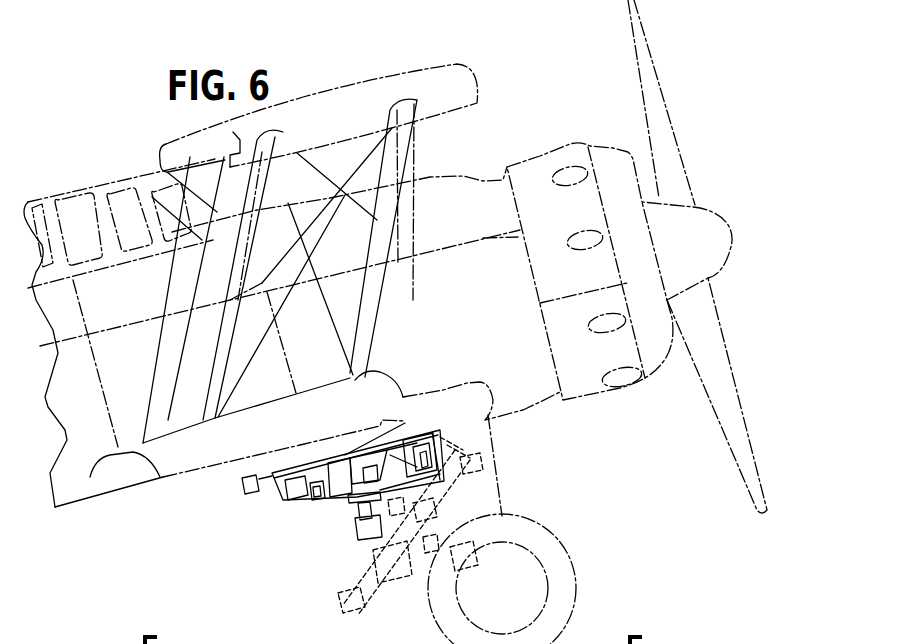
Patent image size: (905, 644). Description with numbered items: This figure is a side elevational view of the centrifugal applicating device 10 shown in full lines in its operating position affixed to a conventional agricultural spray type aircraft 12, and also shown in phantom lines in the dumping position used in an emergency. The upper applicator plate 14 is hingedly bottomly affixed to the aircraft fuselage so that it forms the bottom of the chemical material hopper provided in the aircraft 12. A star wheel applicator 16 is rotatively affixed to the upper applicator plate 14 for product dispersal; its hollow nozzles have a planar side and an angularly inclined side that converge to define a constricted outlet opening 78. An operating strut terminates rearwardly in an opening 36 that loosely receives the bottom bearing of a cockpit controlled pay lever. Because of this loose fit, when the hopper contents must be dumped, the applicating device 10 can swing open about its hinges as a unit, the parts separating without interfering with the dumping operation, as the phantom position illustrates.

The centrifugal applicating device 10 is at (343, 508).
The agricultural aircraft 12 is at (467, 80).
The upper applicator plate 14 is at (407, 446).
The star wheel applicator 16 is at (342, 477).
The operating strut opening 36 is at (245, 483).
The constricted outlet opening 78 is at (320, 487).